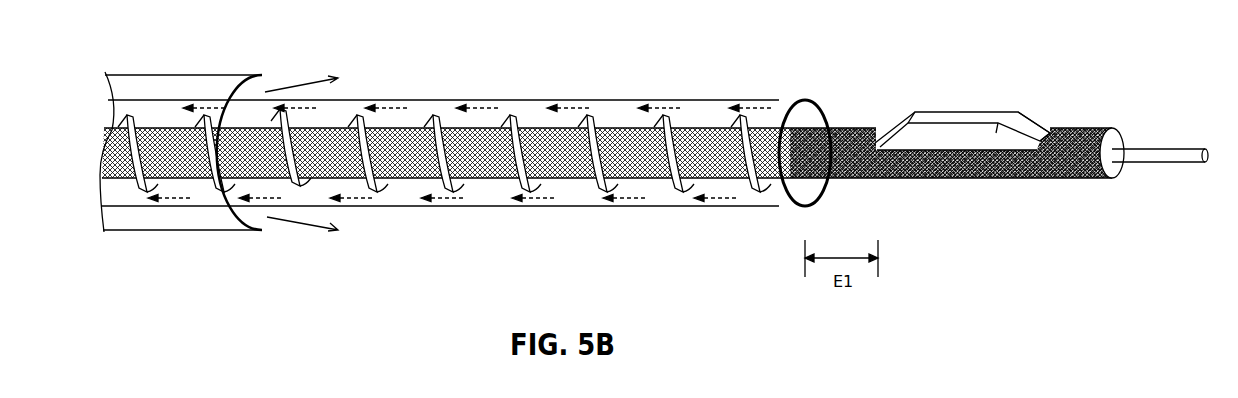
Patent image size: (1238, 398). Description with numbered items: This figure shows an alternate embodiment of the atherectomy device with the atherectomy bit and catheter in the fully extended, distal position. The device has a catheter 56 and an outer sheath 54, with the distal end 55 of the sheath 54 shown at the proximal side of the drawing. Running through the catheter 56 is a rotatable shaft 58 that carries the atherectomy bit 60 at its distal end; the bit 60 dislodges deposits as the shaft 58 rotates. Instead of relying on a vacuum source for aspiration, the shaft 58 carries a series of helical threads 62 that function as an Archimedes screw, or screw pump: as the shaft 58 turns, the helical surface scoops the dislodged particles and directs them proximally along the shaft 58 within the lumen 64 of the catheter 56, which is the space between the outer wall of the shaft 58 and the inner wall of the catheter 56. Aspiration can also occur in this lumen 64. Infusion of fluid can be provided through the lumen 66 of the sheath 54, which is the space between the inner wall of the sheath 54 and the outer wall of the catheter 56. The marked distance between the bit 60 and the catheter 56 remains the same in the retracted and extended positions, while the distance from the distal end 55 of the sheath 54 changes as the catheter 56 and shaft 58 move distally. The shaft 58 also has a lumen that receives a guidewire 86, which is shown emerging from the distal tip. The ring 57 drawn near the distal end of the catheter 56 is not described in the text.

The sheath 54 is at (160, 75).
The distal end of sheath 55 is at (263, 231).
The catheter 56 is at (617, 112).
The ring 57 is at (812, 100).
The rotatable shaft 58 is at (861, 128).
The atherectomy bit 60 is at (980, 117).
The threads 62 is at (531, 181).
The lumen of catheter 64 is at (803, 187).
The lumen of sheath 66 is at (267, 90).
The guidewire 86 is at (1158, 149).